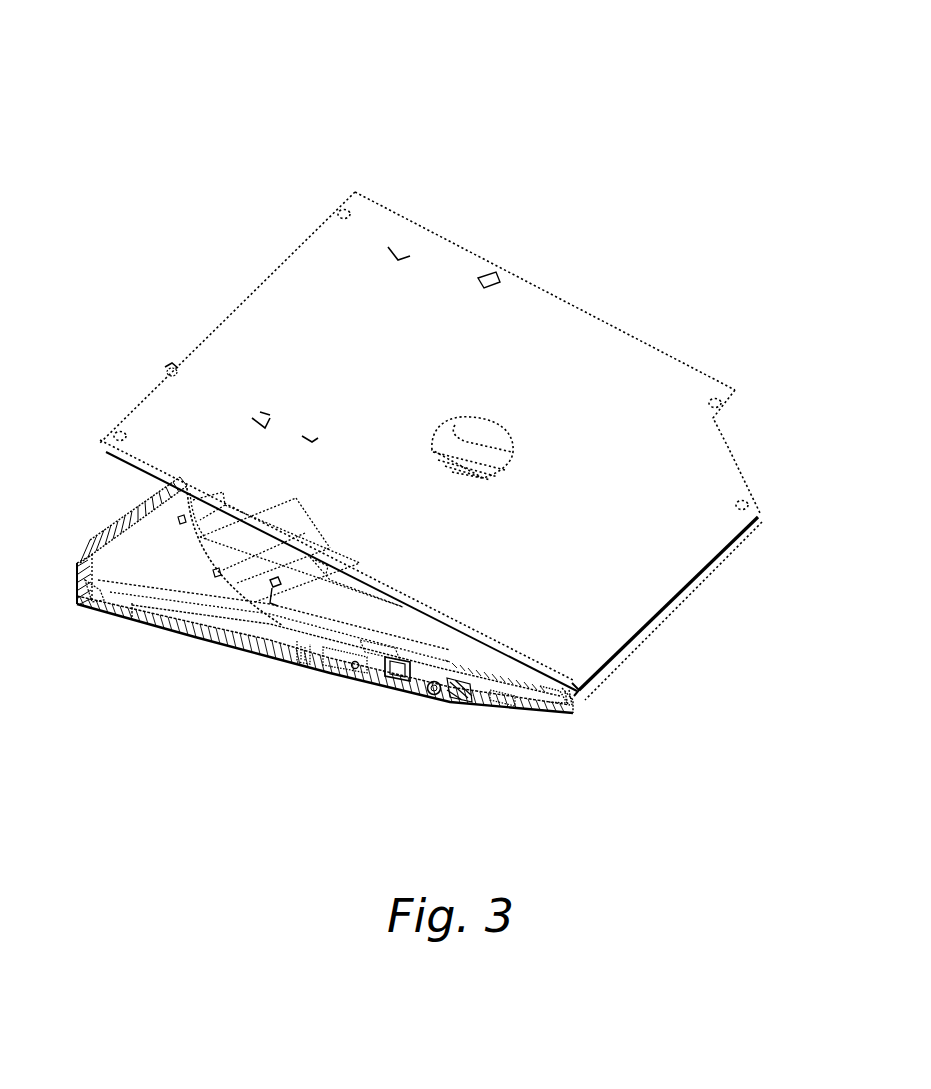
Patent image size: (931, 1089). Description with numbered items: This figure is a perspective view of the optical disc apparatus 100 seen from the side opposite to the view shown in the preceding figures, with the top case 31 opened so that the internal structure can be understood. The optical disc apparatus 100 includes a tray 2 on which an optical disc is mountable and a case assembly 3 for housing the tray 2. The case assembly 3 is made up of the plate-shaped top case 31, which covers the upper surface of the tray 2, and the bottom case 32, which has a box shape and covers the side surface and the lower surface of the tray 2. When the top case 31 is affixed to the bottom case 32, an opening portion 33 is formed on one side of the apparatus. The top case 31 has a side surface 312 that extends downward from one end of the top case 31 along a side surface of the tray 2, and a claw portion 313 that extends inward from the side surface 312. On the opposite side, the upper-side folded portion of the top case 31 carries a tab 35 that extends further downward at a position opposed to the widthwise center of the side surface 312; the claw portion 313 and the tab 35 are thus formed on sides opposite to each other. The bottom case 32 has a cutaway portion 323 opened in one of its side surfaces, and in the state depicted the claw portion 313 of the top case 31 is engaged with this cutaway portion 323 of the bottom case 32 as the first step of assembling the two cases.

The optical disc apparatus 100 is at (413, 433).
The case assembly 3 is at (419, 475).
The top case 31 is at (431, 486).
The bottom case 32 is at (332, 498).
The opening portion 33 is at (233, 689).
The tab 35 is at (172, 370).
The tray 2 is at (180, 573).
The side surface 312 is at (665, 617).
The claw portion 313 is at (588, 697).
The cutaway portion 323 is at (583, 697).